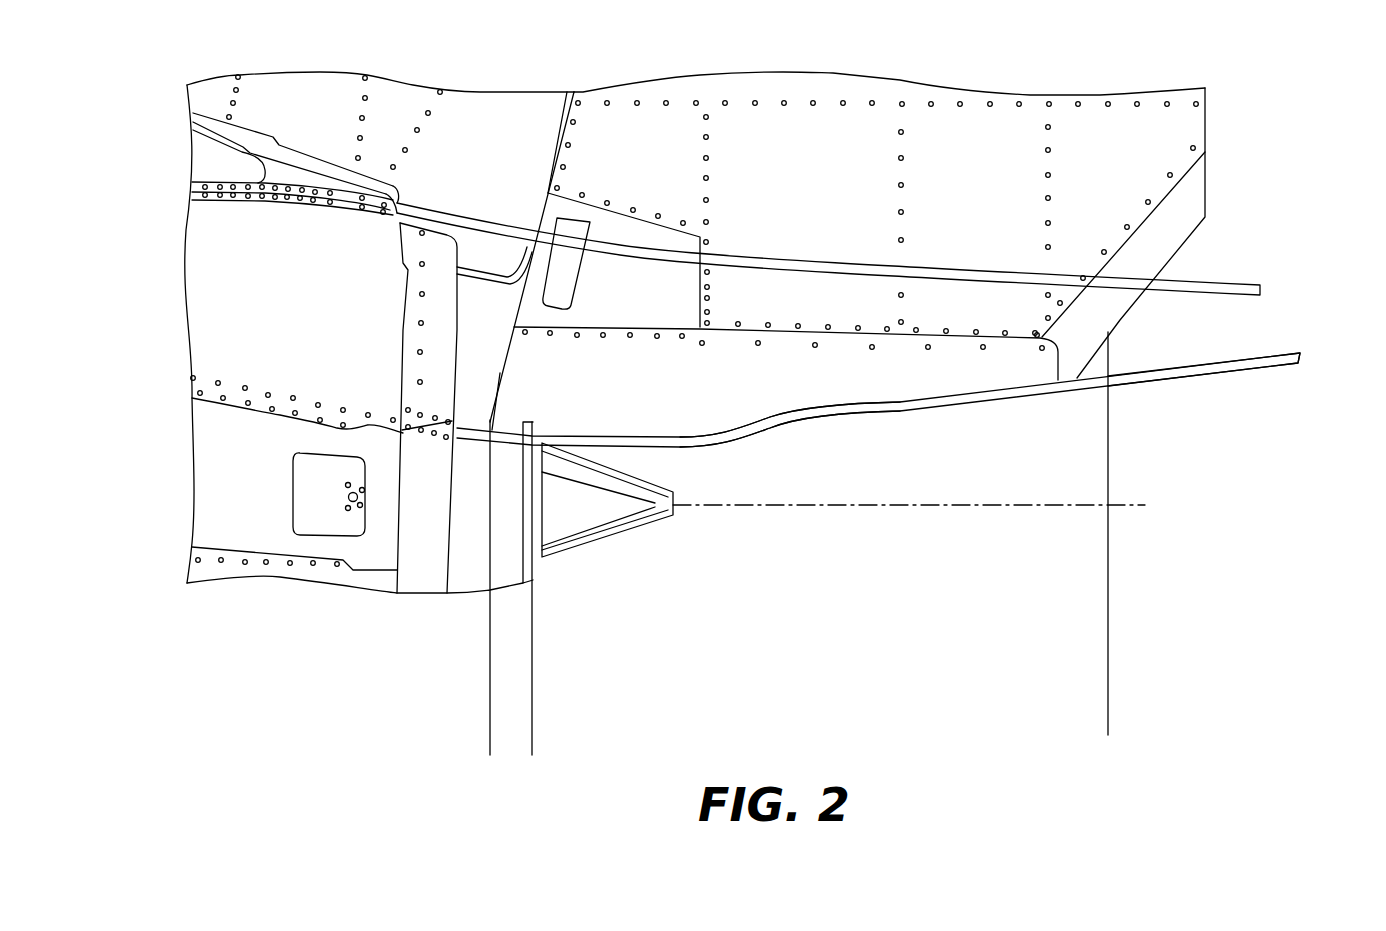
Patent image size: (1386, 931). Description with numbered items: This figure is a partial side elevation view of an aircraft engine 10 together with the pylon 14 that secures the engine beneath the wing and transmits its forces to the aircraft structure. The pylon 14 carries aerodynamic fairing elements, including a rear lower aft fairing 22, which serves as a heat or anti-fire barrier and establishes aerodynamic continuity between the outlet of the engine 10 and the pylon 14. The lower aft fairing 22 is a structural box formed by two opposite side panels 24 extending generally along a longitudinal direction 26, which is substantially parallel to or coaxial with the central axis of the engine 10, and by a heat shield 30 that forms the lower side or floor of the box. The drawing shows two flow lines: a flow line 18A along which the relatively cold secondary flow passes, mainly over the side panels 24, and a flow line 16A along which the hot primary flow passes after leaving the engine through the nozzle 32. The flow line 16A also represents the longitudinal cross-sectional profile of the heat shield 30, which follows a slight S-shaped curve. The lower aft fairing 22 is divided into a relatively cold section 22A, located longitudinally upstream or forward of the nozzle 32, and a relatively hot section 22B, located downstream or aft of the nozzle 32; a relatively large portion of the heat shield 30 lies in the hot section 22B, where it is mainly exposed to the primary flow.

The aircraft engine 10 is at (272, 339).
The pylon 14 is at (1224, 158).
The flow line 18A is at (1237, 297).
The flow line 16A is at (1265, 366).
The lower aft fairing 22 is at (925, 409).
The side panels 24 is at (719, 398).
The longitudinal direction 26 is at (1145, 505).
The heat shield 30 is at (740, 432).
The nozzle 32 is at (533, 576).
The cold section 22A is at (572, 639).
The hot section 22B is at (1108, 694).